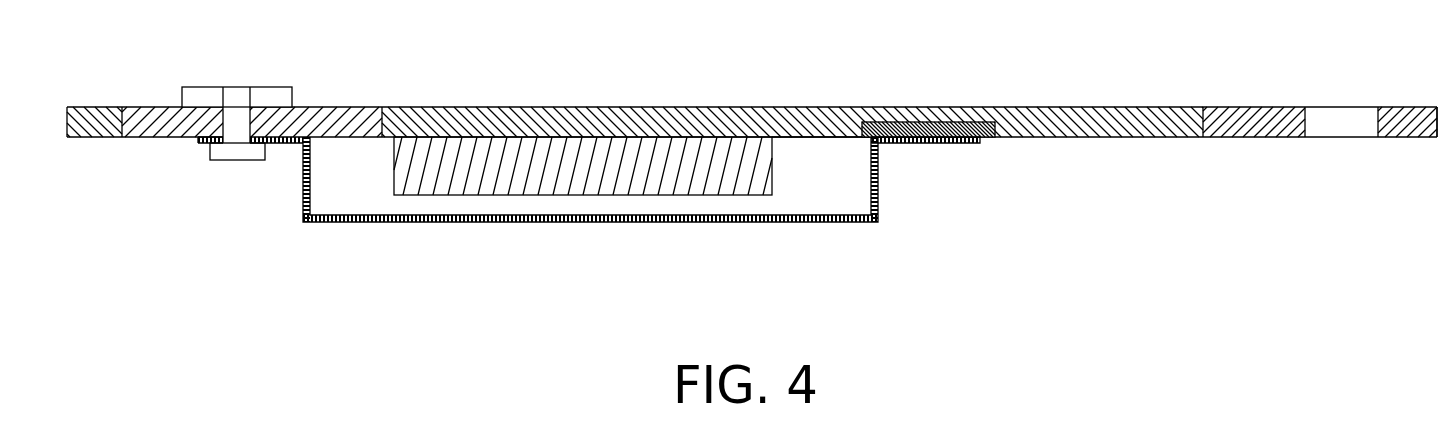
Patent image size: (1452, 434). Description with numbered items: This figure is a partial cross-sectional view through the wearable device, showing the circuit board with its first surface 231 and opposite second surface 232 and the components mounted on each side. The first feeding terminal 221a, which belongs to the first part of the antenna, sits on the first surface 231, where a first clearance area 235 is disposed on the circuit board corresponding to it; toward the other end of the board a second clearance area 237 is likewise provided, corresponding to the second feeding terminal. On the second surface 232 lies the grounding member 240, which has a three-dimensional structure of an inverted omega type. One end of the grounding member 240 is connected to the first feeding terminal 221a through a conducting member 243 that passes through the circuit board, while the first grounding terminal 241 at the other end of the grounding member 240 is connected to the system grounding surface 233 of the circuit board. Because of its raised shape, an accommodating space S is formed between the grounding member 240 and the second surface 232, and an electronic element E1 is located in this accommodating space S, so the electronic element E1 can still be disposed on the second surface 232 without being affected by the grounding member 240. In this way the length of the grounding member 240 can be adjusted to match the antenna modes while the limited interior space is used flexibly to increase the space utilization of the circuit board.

The first feeding terminal 221a is at (207, 95).
The first clearance area 235 is at (157, 130).
The conducting member 243 is at (237, 160).
The grounding member 240 is at (503, 222).
The electronic element E1 is at (577, 178).
The accommodating space S is at (822, 135).
The first grounding terminal 241 is at (935, 145).
The system grounding surface 233 is at (988, 142).
The first surface 231 is at (1092, 107).
The second surface 232 is at (1085, 137).
The second clearance area 237 is at (1410, 137).